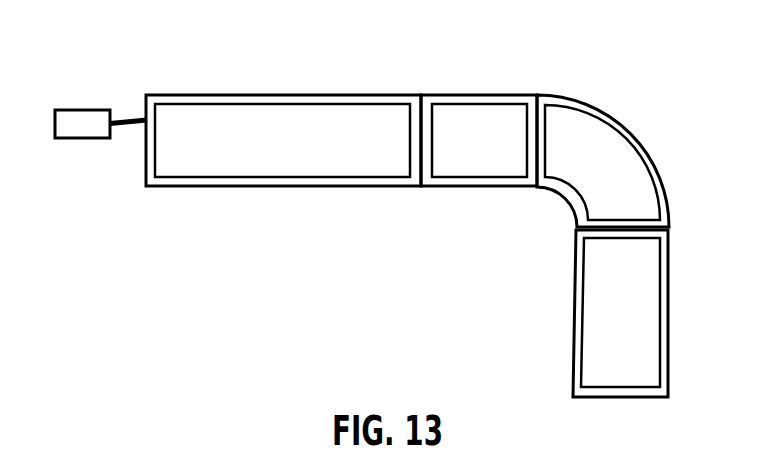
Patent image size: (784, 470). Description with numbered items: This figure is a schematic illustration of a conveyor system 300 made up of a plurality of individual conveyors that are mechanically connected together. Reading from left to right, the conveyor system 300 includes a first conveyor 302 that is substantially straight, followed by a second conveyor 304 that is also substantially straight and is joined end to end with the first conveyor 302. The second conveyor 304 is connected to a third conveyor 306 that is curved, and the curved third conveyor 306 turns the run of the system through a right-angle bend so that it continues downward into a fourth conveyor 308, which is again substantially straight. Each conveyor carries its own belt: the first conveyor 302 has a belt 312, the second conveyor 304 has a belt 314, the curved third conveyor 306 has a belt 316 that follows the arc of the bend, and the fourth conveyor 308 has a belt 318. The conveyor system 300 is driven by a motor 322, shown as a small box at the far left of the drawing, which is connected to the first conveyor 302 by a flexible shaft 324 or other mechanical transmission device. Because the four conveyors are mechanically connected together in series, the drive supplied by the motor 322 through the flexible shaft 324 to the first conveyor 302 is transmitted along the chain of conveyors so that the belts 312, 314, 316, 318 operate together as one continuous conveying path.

The conveyor system 300 is at (658, 100).
The first conveyor 302 is at (312, 92).
The second conveyor 304 is at (487, 93).
The third conveyor 306 is at (665, 182).
The fourth conveyor 308 is at (670, 323).
The belt 312 is at (310, 178).
The belt 314 is at (477, 178).
The belt 316 is at (573, 195).
The belt 318 is at (584, 318).
The motor 322 is at (85, 139).
The flexible shaft 324 is at (135, 117).